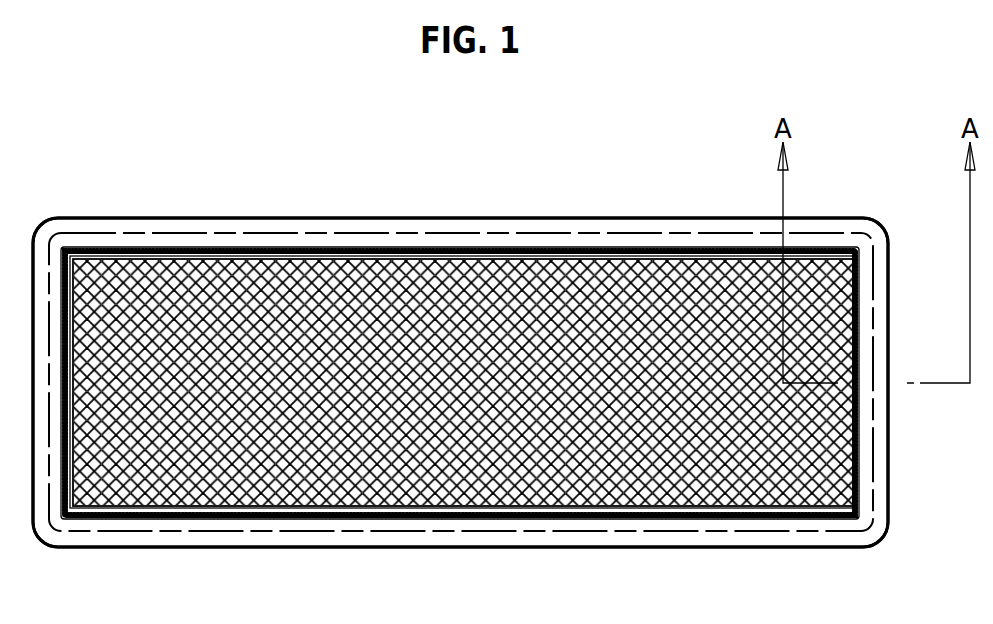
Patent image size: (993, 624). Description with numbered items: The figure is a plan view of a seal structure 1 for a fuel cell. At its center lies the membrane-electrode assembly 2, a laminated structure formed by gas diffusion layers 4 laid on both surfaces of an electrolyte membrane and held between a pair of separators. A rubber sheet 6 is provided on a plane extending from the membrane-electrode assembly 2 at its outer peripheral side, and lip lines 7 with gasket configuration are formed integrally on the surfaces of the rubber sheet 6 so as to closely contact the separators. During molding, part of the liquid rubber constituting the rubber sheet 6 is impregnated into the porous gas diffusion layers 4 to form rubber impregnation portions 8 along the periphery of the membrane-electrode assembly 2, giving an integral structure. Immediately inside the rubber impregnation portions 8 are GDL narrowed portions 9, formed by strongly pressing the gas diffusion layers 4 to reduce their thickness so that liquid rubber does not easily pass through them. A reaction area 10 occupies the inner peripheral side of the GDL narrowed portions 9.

The seal structure 1 is at (518, 213).
The membrane-electrode assembly 2 is at (283, 308).
The gas diffusion layers 4 is at (187, 325).
The rubber sheet 6 is at (867, 482).
The lip lines 7 is at (877, 508).
The rubber impregnation portions 8 is at (860, 450).
The GDL narrowed portions 9 is at (850, 430).
The reaction area 10 is at (470, 470).